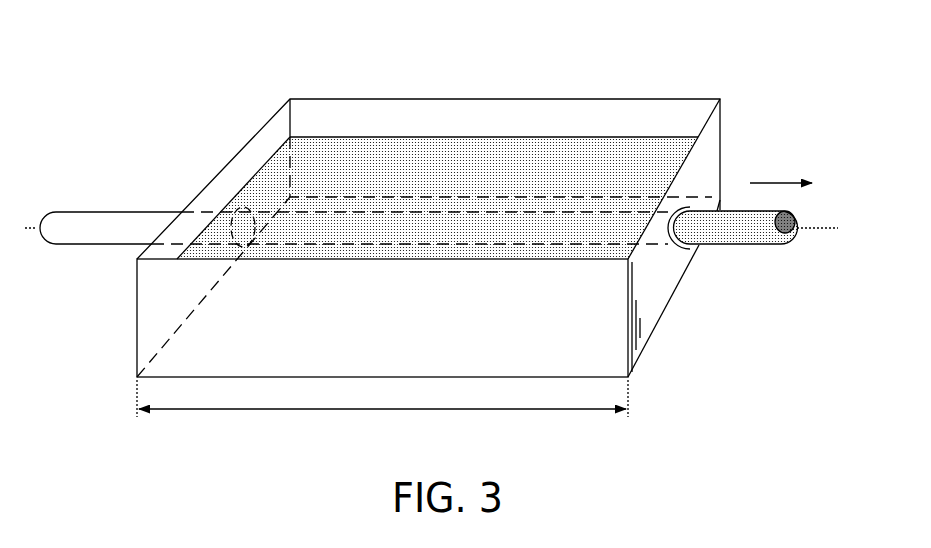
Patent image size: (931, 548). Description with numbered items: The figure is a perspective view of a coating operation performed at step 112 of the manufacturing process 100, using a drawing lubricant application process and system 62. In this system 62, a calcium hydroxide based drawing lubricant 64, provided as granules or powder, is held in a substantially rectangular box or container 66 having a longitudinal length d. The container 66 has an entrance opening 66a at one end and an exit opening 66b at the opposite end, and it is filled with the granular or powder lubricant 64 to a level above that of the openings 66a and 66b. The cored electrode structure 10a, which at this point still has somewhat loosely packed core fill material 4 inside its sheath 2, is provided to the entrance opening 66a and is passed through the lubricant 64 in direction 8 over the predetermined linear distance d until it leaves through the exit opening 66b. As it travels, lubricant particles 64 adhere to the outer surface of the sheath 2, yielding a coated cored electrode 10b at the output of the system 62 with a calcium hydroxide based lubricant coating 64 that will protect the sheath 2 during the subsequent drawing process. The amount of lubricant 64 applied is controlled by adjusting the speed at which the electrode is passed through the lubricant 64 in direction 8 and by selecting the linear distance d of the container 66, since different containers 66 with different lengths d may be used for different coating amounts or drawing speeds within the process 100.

The manufacturing process 100 is at (137, 47).
The drawing lubricant application step 112 is at (258, 90).
The drawing lubricant application process and system 62 is at (198, 120).
The calcium hydroxide based drawing lubricant 64 is at (452, 147).
The container 66 is at (137, 305).
The entrance opening 66a is at (235, 203).
The exit opening 66b is at (683, 258).
The cored electrode structure 10a is at (82, 212).
The coated cored electrode 10b is at (735, 246).
The direction 8 is at (766, 182).
The core fill material 4 is at (795, 214).
The sheath 2 is at (794, 229).
The longitudinal length d is at (383, 410).